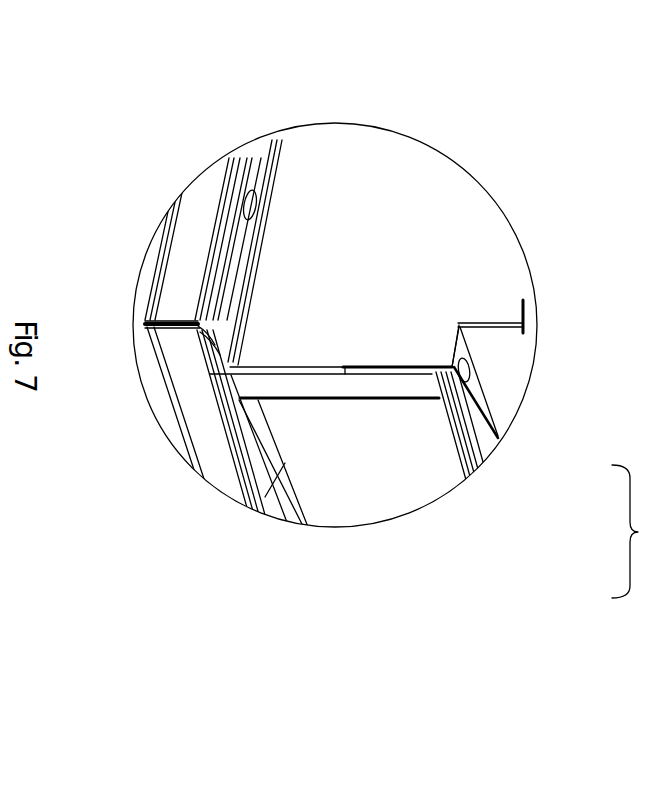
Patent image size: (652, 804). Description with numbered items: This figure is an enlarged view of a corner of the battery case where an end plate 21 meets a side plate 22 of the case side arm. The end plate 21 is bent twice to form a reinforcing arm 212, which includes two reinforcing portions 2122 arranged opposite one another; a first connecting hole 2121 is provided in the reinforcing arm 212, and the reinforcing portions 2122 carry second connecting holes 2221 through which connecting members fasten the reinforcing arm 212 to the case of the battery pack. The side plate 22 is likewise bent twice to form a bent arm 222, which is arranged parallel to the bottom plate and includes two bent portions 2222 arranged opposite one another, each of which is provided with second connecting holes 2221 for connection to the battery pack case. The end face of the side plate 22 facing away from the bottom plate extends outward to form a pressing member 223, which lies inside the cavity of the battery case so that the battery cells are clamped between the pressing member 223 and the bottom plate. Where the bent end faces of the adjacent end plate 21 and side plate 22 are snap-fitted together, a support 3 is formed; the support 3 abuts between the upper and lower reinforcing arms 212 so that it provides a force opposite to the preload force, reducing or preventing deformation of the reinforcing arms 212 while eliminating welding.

The end plate 21 is at (390, 487).
The side plate 22 is at (371, 213).
The support 3 is at (363, 378).
The reinforcing arm 212 is at (262, 500).
The bent arm 222 is at (216, 165).
The pressing member 223 is at (526, 315).
The first connecting hole 2121 is at (478, 378).
The reinforcing portion 2122 is at (498, 438).
The second connecting hole 2221 is at (240, 208).
The bent portion 2222 is at (145, 326).